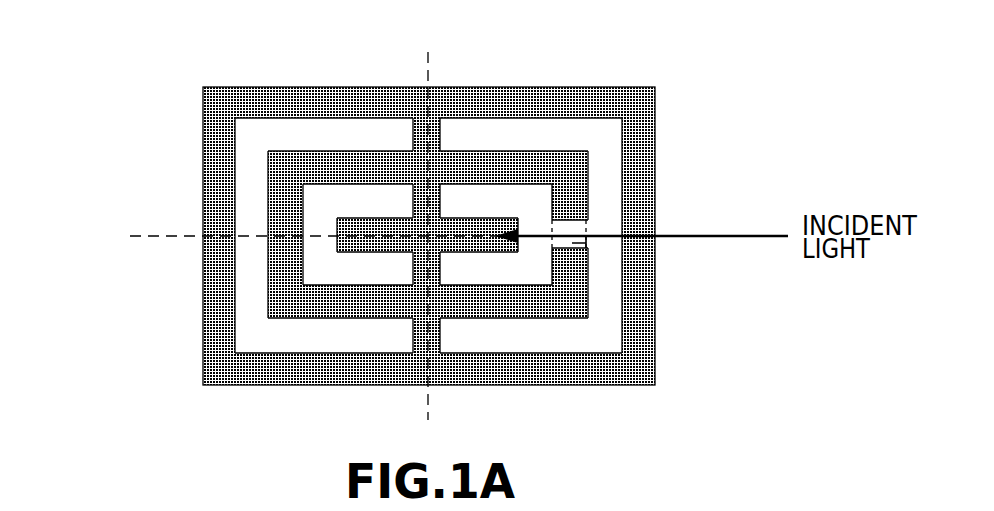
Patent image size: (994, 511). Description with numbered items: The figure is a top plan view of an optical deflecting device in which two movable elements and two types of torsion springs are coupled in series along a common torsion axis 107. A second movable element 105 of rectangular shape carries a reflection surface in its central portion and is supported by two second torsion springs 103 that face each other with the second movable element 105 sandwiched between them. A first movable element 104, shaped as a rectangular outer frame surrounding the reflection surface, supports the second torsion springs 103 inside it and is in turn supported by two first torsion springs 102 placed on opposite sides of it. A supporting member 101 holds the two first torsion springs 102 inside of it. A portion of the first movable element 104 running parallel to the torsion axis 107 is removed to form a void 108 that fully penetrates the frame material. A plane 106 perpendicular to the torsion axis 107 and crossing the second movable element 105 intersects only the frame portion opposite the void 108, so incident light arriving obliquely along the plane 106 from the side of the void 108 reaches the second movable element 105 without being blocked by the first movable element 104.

The supporting member 101 is at (605, 105).
The first torsion springs 102 is at (417, 138).
The second torsion springs 103 is at (413, 205).
The first movable element 104 is at (287, 202).
The second movable element 105 is at (555, 220).
The plane 106 is at (165, 235).
The torsion axis 107 is at (430, 72).
The void 108 is at (578, 243).